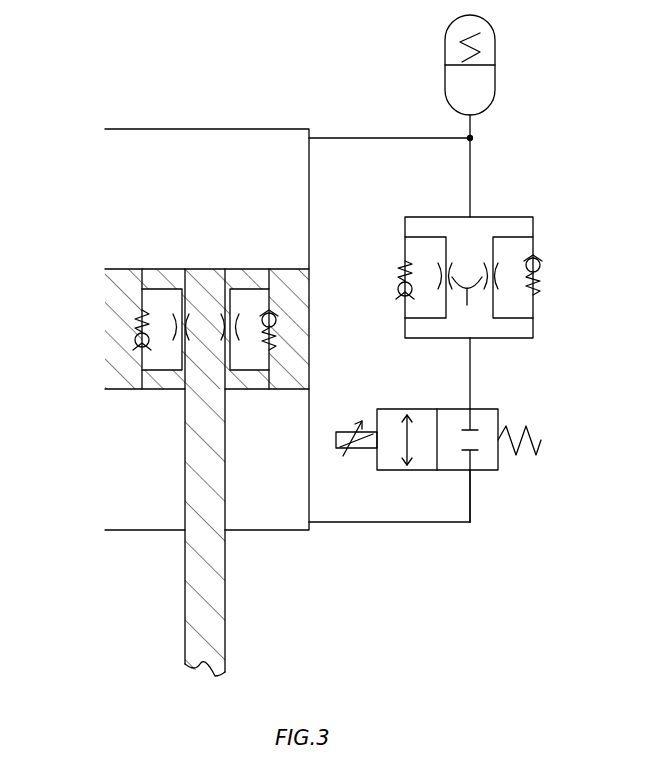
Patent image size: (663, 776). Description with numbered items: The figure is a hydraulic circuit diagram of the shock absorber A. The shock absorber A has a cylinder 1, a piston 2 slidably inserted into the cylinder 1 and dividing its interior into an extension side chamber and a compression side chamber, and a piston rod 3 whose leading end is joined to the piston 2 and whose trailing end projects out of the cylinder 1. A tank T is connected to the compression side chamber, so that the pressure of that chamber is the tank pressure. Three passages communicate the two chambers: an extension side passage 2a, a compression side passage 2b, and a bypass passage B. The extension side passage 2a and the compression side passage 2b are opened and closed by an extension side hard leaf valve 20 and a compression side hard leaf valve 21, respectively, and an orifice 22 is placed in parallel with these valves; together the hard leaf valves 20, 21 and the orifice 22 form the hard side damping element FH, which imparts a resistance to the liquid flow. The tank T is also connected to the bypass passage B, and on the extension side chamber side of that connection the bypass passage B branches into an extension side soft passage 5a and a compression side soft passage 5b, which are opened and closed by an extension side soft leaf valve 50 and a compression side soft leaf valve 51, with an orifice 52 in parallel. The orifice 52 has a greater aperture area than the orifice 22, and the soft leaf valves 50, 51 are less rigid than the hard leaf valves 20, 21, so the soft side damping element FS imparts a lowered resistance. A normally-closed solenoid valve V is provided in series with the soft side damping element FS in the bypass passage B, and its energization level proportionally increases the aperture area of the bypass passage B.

The shock absorber A is at (110, 111).
The cylinder 1 is at (105, 191).
The piston 2 is at (245, 268).
The extension side passage 2a is at (138, 374).
The compression side passage 2b is at (275, 378).
The piston rod 3 is at (222, 594).
The extension side hard leaf valve 20 is at (135, 338).
The compression side hard leaf valve 21 is at (280, 322).
The orifice 22 is at (222, 327).
The hard side damping element FH is at (122, 292).
The tank T is at (497, 68).
The soft side damping element FS is at (512, 211).
The extension side soft passage 5a is at (405, 226).
The compression side soft passage 5b is at (535, 228).
The extension side soft leaf valve 50 is at (398, 290).
The compression side soft leaf valve 51 is at (540, 277).
The orifice 52 is at (468, 302).
The solenoid valve V is at (388, 472).
The bypass passage B is at (478, 490).